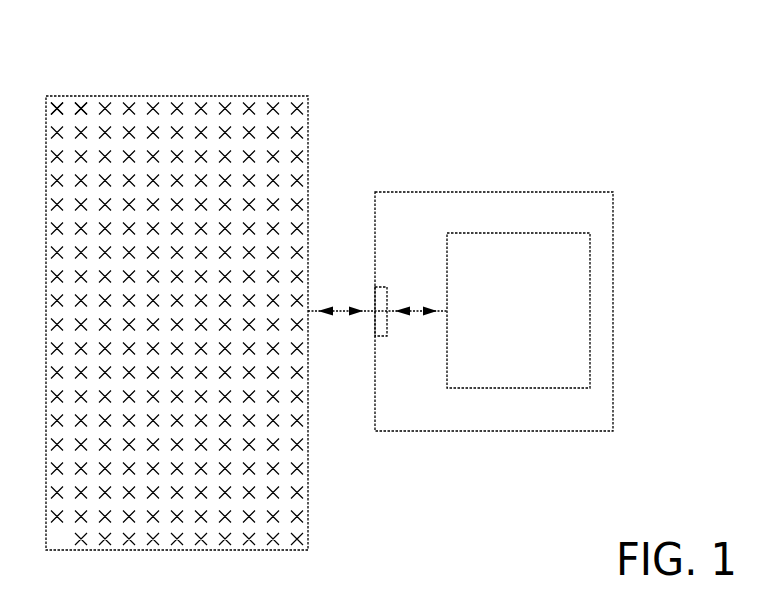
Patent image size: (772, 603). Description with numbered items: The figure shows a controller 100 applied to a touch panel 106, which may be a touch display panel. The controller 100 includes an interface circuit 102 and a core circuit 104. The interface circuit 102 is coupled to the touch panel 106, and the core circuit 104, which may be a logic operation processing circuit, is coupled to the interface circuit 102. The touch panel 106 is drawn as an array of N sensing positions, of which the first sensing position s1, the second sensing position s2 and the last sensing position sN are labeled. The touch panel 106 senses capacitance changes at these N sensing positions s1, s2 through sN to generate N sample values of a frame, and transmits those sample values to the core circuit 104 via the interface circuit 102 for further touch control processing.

The controller 100 is at (447, 192).
The interface circuit 102 is at (381, 287).
The core circuit 104 is at (490, 233).
The touch panel 106 is at (272, 96).
The sensing position s1 is at (56, 99).
The sensing position s2 is at (84, 99).
The sensing position sN is at (305, 541).